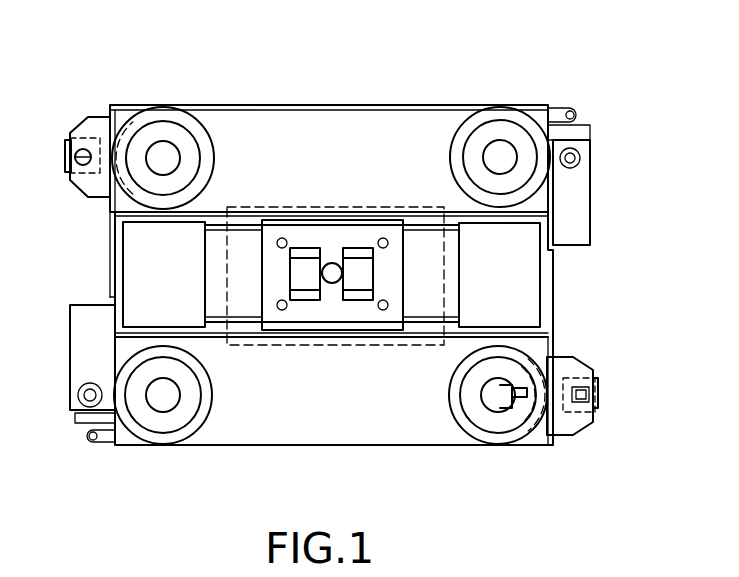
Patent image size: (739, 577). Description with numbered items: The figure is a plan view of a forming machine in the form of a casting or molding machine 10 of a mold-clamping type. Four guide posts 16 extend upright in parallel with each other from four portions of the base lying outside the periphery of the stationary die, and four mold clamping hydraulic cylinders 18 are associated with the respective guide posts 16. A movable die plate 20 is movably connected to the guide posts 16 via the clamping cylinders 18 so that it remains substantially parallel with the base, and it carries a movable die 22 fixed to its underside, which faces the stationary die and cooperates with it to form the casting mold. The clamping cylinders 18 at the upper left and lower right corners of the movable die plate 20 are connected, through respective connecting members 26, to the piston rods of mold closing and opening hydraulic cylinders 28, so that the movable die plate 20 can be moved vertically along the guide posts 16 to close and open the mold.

The casting machine 10 is at (527, 52).
The guide posts 16 is at (165, 155).
The mold clamping hydraulic cylinders 18 is at (207, 128).
The movable die plate 20 is at (324, 124).
The movable die 22 is at (345, 345).
The connecting members 26 is at (97, 123).
The mold closing and opening hydraulic cylinders 28 is at (63, 128).